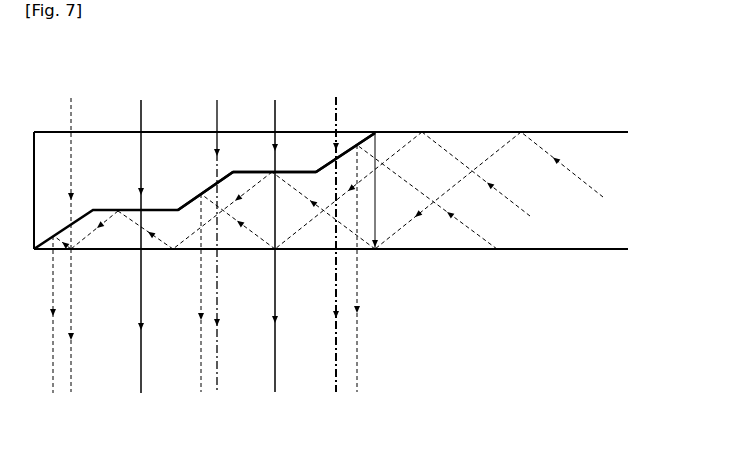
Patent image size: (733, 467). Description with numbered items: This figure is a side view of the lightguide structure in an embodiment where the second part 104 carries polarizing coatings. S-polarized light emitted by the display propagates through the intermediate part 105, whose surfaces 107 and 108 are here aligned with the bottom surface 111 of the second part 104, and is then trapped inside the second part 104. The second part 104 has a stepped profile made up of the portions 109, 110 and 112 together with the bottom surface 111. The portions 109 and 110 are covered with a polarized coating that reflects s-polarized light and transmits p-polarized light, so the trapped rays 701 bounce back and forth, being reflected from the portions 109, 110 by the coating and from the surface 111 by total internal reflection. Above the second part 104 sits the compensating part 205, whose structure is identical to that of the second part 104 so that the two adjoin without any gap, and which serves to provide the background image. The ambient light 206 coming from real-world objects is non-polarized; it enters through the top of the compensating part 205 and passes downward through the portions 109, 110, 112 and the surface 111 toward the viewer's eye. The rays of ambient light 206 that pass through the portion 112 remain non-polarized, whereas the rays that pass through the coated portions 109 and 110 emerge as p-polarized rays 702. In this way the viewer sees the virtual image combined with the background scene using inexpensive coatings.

The second part 104 is at (108, 250).
The intermediate part 105 is at (518, 158).
The surface 107 is at (468, 132).
The surface 108 is at (445, 252).
The portion 109 is at (194, 194).
The portion 110 is at (330, 162).
The surface 111 is at (240, 253).
The portion 112 is at (260, 170).
The compensating part 205 is at (100, 159).
The ambient light 206 is at (138, 147).
The trapped rays 701 is at (480, 236).
The p-polarized rays 702 is at (73, 350).